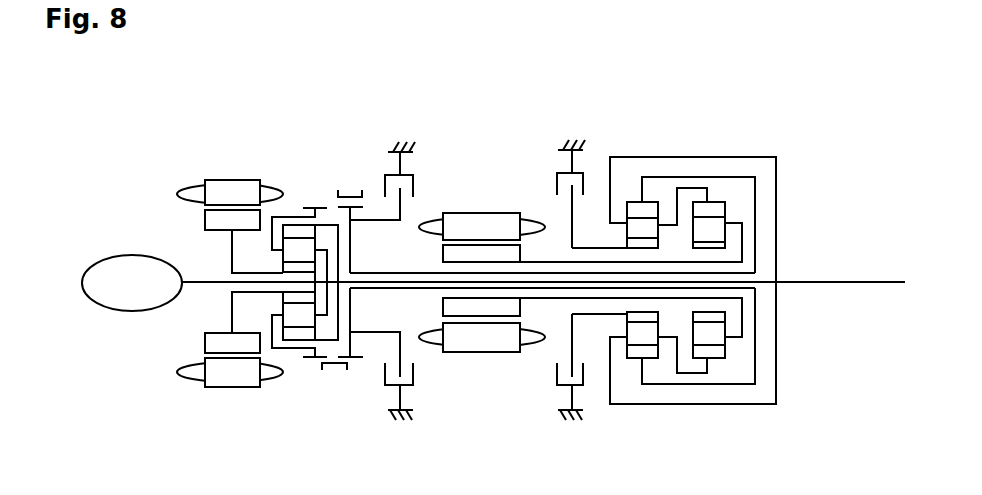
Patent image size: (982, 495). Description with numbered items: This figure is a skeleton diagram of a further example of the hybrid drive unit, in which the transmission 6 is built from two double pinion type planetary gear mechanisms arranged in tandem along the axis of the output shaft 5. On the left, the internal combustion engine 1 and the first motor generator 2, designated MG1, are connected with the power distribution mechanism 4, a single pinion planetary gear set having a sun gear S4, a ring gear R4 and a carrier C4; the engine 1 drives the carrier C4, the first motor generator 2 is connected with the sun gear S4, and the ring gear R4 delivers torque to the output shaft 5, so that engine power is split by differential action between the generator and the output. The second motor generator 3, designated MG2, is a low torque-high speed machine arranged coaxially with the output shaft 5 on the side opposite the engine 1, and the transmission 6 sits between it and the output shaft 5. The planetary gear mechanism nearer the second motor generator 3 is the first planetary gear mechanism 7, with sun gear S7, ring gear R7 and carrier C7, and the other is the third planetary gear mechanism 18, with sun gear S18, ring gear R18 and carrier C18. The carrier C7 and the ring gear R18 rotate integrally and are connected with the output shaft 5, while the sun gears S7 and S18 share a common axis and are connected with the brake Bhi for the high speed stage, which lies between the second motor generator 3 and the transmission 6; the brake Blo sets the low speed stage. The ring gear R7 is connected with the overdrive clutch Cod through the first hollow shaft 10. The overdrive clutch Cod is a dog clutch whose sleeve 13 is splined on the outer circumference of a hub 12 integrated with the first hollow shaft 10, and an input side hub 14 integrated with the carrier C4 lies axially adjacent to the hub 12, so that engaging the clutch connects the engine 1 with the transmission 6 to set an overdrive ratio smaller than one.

The internal combustion engine 1 is at (130, 257).
The first motor generator 2 is at (196, 364).
The second motor generator 3 is at (463, 353).
The power distribution mechanism 4 is at (259, 326).
The output shaft 5 is at (801, 280).
The transmission 6 is at (670, 277).
The first planetary gear mechanism 7 is at (663, 288).
The first hollow shaft 10 is at (386, 291).
The hub 12 is at (353, 220).
The sleeve 13 is at (339, 195).
The input side hub 14 is at (307, 207).
The third planetary gear mechanism 18 is at (670, 296).
The first motor generator MG1 is at (230, 216).
The second motor generator MG2 is at (482, 271).
The overdrive clutch Cod is at (327, 160).
The brake for setting the low speed stage Blo is at (382, 269).
The brake for setting the high speed stage Bhi is at (570, 269).
The ring gear R4 is at (272, 238).
The carrier C4 is at (283, 250).
The sun gear S4 is at (275, 292).
The ring gear R7 is at (635, 202).
The carrier C7 is at (610, 218).
The sun gear S7 is at (614, 315).
The ring gear R18 is at (720, 202).
The carrier C18 is at (742, 225).
The sun gear S18 is at (727, 248).